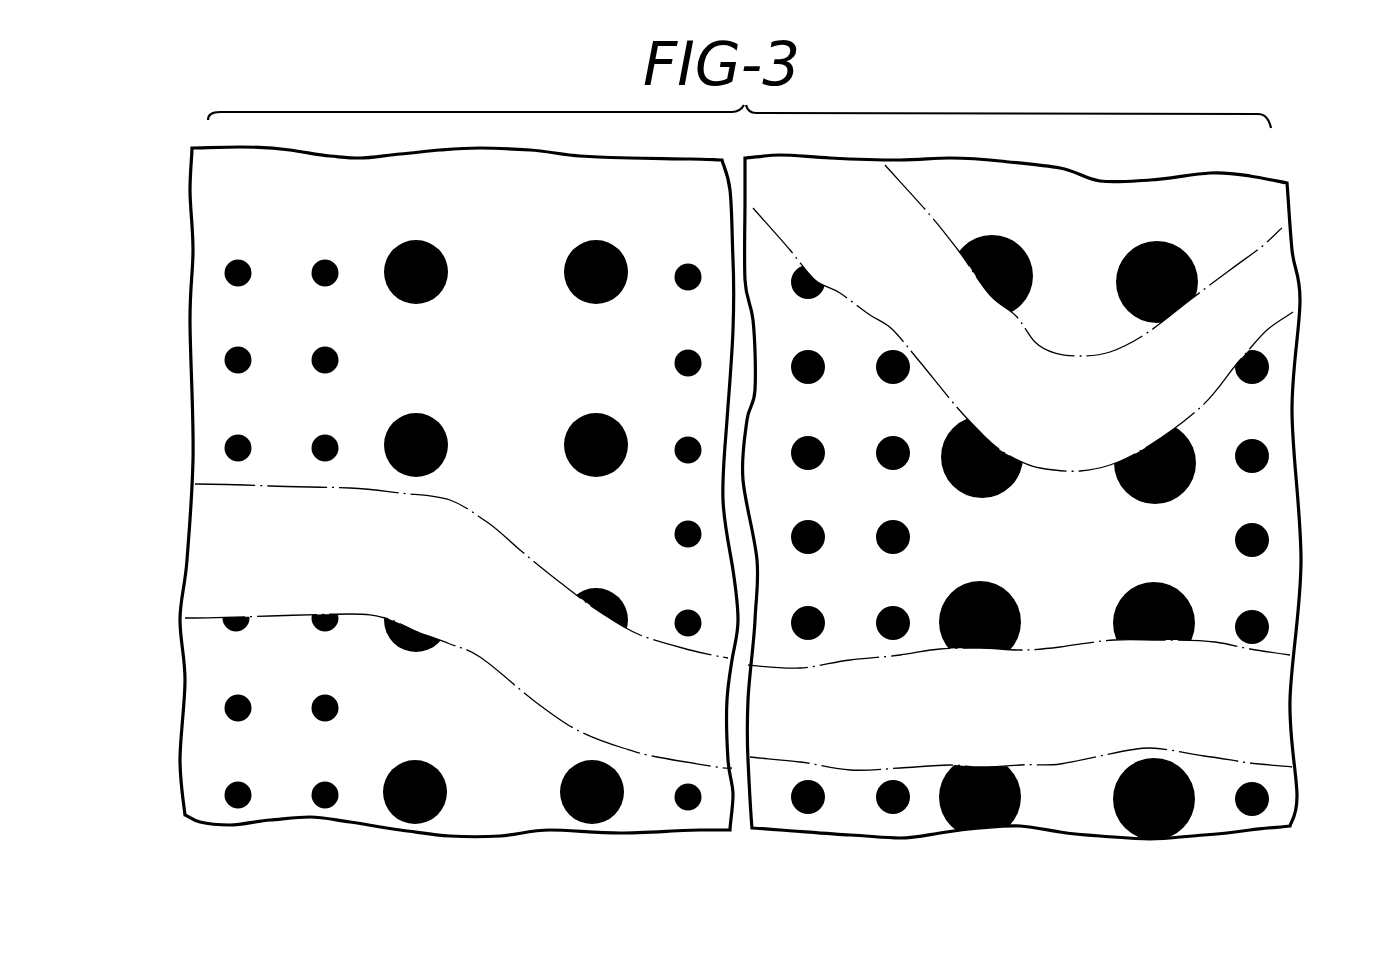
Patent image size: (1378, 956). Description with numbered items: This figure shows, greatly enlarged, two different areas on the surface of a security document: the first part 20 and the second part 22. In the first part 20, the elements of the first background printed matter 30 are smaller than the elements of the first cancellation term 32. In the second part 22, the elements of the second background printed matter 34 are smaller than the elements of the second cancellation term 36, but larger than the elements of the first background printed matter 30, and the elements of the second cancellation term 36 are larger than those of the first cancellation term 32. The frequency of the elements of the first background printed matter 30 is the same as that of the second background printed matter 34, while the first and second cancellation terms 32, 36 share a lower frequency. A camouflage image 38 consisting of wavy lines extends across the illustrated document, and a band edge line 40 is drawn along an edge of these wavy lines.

The first part 20 is at (428, 500).
The second part 22 is at (1057, 503).
The first background printed matter 30 is at (226, 268).
The first cancellation term 32 is at (600, 240).
The second background printed matter 34 is at (822, 355).
The second cancellation term 36 is at (1193, 609).
The camouflage image 38 is at (1267, 285).
The band edge line 40 is at (1280, 343).